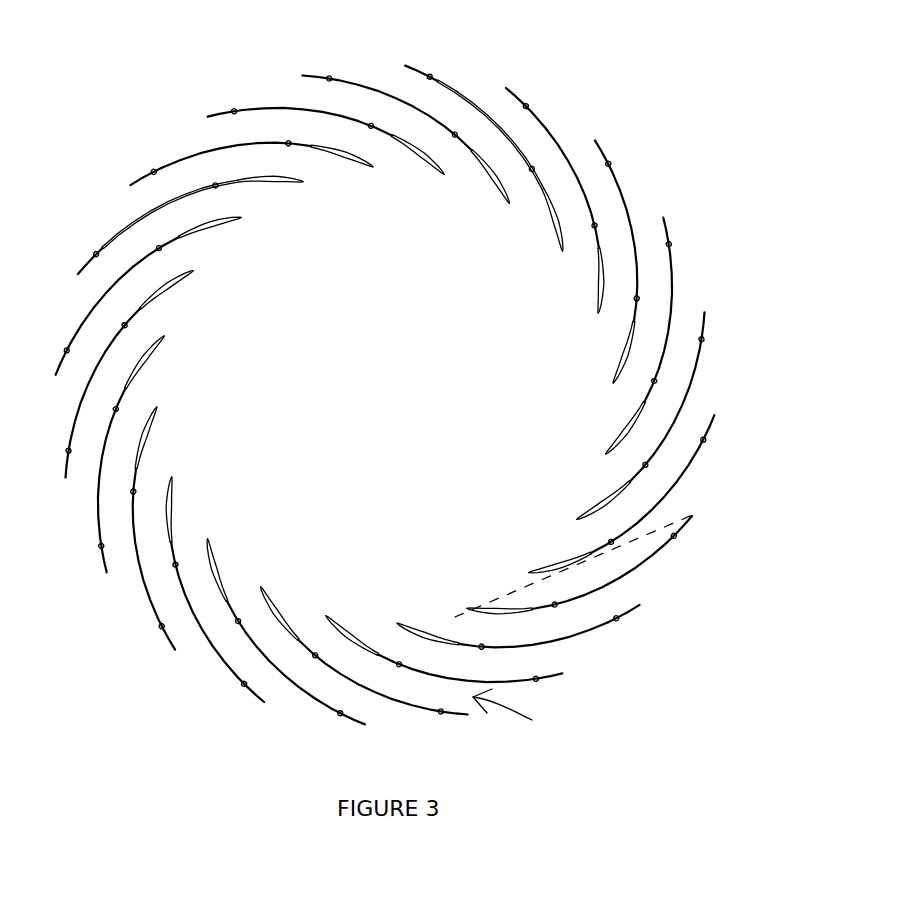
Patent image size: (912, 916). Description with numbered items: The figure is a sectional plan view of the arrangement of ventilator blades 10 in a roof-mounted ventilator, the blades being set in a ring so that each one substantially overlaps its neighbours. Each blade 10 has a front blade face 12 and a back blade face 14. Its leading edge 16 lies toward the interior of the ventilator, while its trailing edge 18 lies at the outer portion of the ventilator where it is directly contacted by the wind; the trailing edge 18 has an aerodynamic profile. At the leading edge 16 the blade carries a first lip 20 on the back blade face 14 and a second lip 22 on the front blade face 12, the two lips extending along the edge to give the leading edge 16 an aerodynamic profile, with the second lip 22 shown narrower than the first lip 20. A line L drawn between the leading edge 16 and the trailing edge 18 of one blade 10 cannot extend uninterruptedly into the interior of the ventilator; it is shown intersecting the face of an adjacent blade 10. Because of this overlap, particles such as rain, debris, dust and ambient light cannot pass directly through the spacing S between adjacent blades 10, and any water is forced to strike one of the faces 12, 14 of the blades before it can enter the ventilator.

The ventilator blade 10 is at (408, 386).
The front blade face 12 is at (392, 301).
The back blade face 14 is at (440, 90).
The leading edge 16 is at (190, 272).
The trailing edge 18 is at (302, 75).
The first lip 20 is at (527, 221).
The second lip 22 is at (372, 157).
The line L- L is at (577, 564).
The spacing S is at (513, 716).